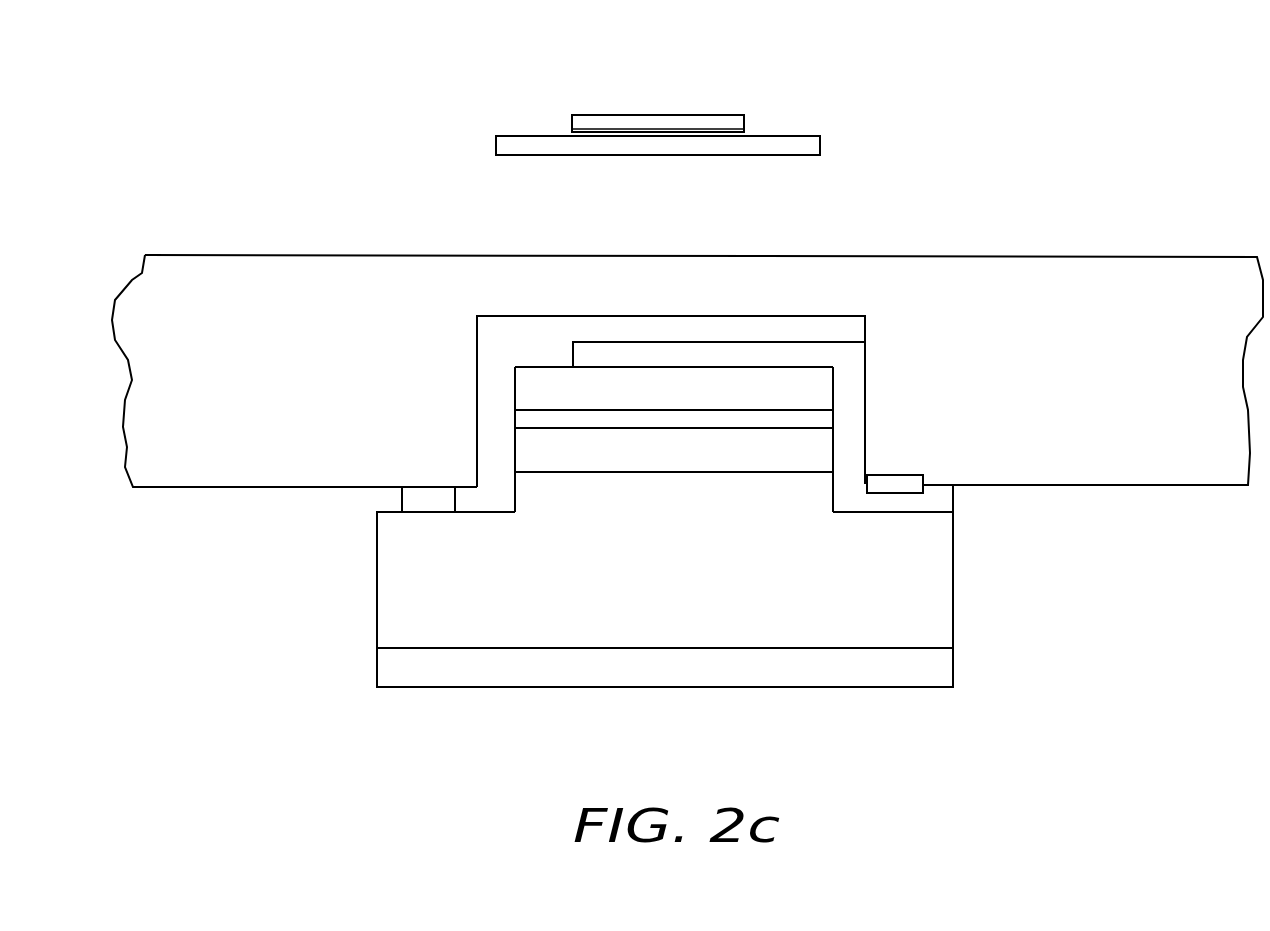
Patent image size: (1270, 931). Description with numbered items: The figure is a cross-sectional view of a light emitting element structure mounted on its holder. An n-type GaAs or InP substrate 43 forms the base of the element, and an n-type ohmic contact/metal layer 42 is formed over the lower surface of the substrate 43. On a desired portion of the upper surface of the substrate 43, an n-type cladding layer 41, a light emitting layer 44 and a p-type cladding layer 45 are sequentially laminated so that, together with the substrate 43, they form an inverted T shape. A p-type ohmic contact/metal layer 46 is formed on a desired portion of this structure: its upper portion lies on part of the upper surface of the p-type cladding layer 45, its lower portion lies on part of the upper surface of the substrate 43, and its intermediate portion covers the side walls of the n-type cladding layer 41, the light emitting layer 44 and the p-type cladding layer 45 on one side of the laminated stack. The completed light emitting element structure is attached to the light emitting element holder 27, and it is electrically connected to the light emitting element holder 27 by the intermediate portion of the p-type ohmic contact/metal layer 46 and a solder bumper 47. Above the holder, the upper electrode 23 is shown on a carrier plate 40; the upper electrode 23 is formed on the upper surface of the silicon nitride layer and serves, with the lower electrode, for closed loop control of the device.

The upper electrode 23 is at (648, 122).
The carrier plate 40 is at (783, 142).
The p-type cladding layer 45 is at (1055, 278).
The p-type ohmic contact/metal layer 46 is at (832, 327).
The light emitting layer 44 is at (525, 417).
The n-type cladding layer 41 is at (723, 459).
The light emitting element holder 27 is at (872, 393).
The solder bumper 47 is at (379, 505).
The n-type GaAs or InP substrate 43 is at (402, 616).
The n-type ohmic contact/metal layer 42 is at (612, 688).